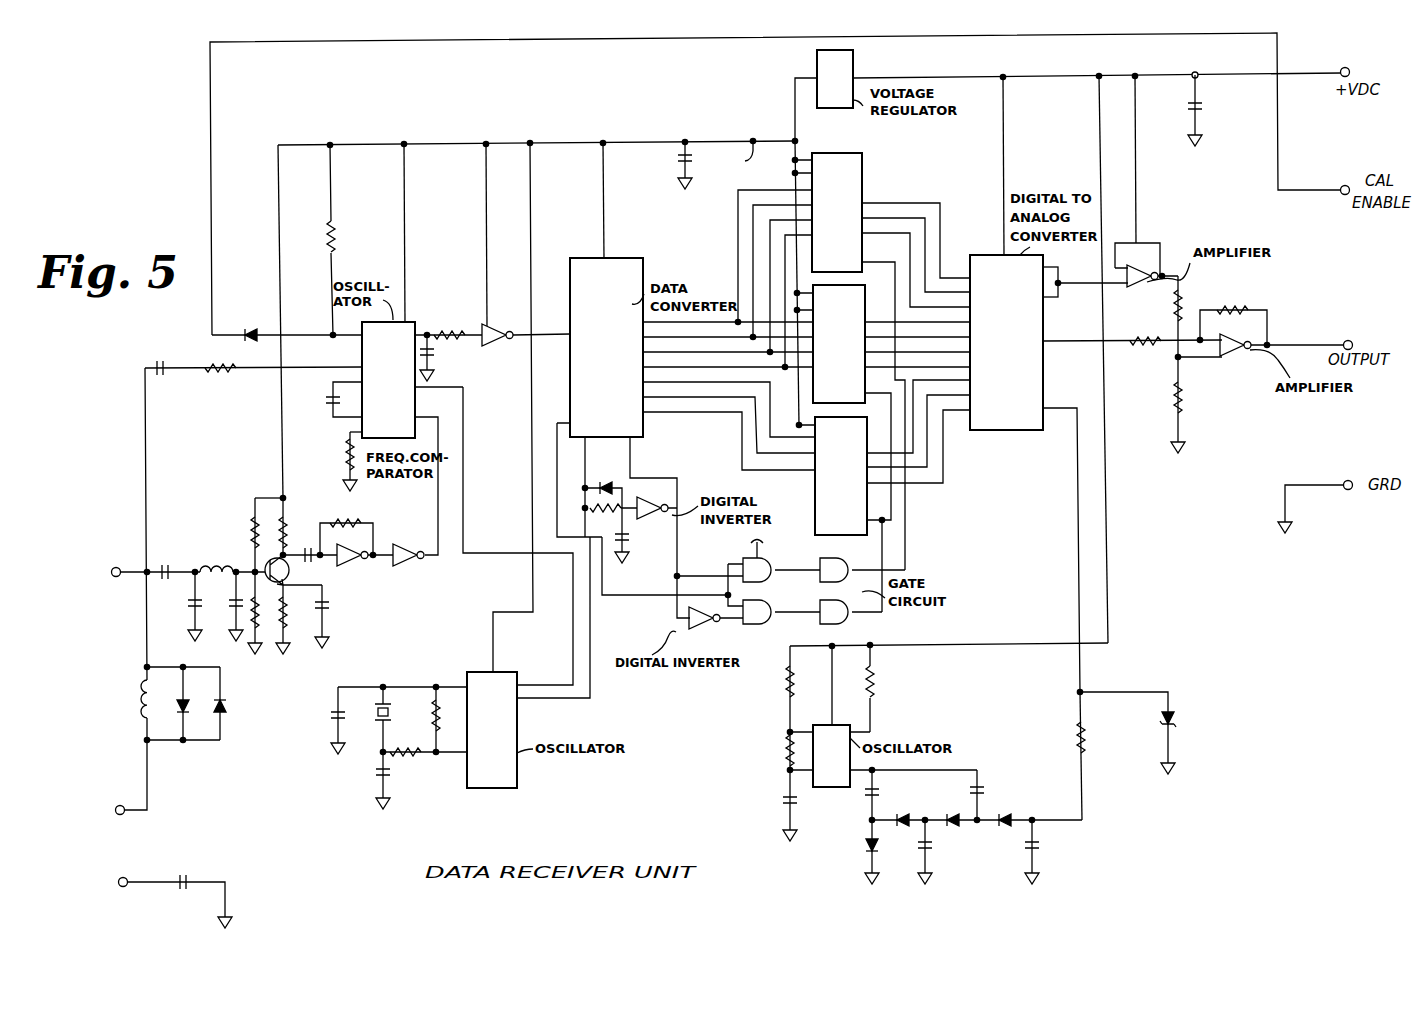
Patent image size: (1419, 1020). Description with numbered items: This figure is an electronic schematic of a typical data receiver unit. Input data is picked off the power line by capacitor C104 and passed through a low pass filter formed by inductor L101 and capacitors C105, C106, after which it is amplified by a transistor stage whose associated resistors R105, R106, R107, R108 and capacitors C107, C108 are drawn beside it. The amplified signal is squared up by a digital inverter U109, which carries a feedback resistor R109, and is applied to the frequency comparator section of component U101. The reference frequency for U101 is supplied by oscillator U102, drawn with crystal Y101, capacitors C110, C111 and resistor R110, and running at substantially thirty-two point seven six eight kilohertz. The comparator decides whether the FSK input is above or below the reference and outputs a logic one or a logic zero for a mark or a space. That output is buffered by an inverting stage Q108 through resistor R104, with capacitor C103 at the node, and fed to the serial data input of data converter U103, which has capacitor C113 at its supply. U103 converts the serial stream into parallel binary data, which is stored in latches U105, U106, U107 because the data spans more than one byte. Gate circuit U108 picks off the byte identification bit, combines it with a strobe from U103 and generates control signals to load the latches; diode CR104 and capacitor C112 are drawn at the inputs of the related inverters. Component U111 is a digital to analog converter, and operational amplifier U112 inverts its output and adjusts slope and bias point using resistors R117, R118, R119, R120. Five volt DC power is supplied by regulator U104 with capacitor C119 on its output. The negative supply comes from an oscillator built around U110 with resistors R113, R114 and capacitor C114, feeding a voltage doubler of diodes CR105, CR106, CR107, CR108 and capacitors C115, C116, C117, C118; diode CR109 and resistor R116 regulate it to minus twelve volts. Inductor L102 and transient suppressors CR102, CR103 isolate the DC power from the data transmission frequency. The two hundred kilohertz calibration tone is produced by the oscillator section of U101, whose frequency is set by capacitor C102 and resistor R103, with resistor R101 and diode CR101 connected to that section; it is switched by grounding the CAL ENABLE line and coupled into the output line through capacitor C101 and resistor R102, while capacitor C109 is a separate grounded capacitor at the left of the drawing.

The resistor R101 is at (353, 240).
The diode CR101 is at (253, 325).
The capacitor C101 is at (167, 357).
The resistor R102 is at (216, 356).
The component U101 is at (382, 380).
The capacitor C102 is at (326, 399).
The resistor R103 is at (330, 461).
The resistor R104 is at (459, 323).
The buffer/transistor stage Q108 is at (507, 327).
The capacitor C103 is at (448, 358).
The data converter U103 is at (606, 347).
The capacitor C113 is at (706, 165).
The regulator circuit U104 is at (835, 79).
The latch U105 is at (837, 212).
The latch U106 is at (839, 344).
The latch U107 is at (841, 476).
The digital to analog converter U111 is at (1014, 342).
The capacitor C119 is at (1218, 110).
The operational amplifier U112 is at (1189, 321).
The resistor R117 is at (1199, 316).
The resistor R120 is at (1233, 315).
The resistor R118 is at (1146, 331).
The resistor R119 is at (1200, 405).
The capacitor C104 is at (171, 559).
The inductor L101 is at (221, 555).
The capacitor C105 is at (176, 606).
The capacitor C106 is at (221, 606).
The resistor R105 is at (232, 535).
The resistor R106 is at (303, 526).
The resistor R107 is at (267, 613).
The resistor R108 is at (297, 619).
The capacitor C108 is at (343, 616).
The capacitor C107 is at (314, 564).
The resistor R109 is at (348, 526).
The digital inverter U109 is at (540, 571).
The diode CR104 is at (603, 477).
The resistor R110 is at (583, 526).
The capacitor C112 is at (642, 535).
The gate circuit U108 is at (795, 591).
The oscillator U102 is at (492, 730).
The capacitor C110 is at (320, 720).
The crystal Y101 is at (404, 719).
The capacitor C111 is at (360, 780).
The inductor L102 is at (122, 699).
The transient suppressor CR102 is at (169, 703).
The diode CR103 is at (245, 703).
The capacitor C109 is at (176, 892).
The resistor R113 is at (769, 689).
The resistor R114 is at (773, 751).
The capacitor C114 is at (772, 805).
The oscillator circuit component U110 is at (834, 756).
The capacitor C115 is at (894, 795).
The capacitor C117 is at (1000, 795).
The diode CR106 is at (895, 814).
The diode CR107 is at (948, 814).
The diode CR108 is at (1017, 811).
The diode CR105 is at (845, 852).
The capacitor C116 is at (946, 852).
The capacitor C118 is at (1054, 852).
The resistor R116 is at (1105, 756).
The diode CR109 is at (1159, 733).